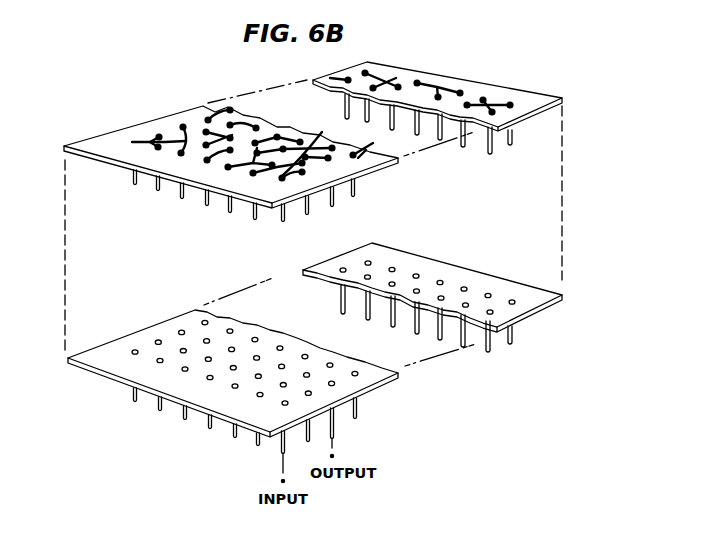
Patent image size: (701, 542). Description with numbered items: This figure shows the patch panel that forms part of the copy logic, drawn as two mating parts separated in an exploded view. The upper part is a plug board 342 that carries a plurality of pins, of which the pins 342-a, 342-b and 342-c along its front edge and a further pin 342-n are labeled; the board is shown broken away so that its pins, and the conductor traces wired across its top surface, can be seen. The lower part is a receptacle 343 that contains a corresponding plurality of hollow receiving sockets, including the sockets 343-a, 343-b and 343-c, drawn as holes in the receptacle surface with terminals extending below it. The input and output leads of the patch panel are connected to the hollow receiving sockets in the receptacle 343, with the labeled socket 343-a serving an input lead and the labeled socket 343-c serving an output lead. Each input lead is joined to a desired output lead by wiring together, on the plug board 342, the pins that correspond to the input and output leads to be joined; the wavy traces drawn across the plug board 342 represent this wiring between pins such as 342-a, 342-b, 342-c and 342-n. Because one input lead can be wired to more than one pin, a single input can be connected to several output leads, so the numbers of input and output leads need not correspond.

The plug board 342 is at (492, 87).
The pin 342-n is at (353, 108).
The pin 342-a is at (281, 217).
The pin 342-b is at (309, 207).
The pin 342-c is at (337, 201).
The receptacle 343 is at (474, 271).
The receiving socket 343-a is at (281, 449).
The receiving socket 343-b is at (311, 434).
The receiving socket 343-c is at (337, 417).